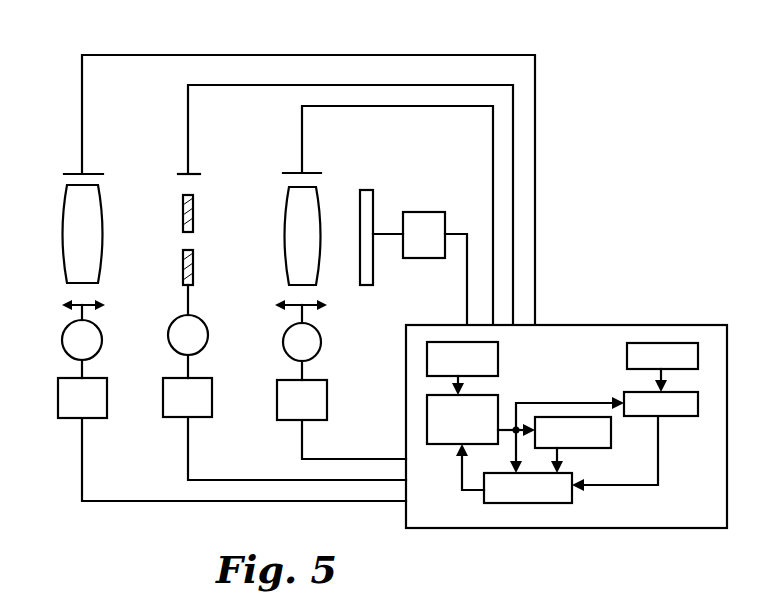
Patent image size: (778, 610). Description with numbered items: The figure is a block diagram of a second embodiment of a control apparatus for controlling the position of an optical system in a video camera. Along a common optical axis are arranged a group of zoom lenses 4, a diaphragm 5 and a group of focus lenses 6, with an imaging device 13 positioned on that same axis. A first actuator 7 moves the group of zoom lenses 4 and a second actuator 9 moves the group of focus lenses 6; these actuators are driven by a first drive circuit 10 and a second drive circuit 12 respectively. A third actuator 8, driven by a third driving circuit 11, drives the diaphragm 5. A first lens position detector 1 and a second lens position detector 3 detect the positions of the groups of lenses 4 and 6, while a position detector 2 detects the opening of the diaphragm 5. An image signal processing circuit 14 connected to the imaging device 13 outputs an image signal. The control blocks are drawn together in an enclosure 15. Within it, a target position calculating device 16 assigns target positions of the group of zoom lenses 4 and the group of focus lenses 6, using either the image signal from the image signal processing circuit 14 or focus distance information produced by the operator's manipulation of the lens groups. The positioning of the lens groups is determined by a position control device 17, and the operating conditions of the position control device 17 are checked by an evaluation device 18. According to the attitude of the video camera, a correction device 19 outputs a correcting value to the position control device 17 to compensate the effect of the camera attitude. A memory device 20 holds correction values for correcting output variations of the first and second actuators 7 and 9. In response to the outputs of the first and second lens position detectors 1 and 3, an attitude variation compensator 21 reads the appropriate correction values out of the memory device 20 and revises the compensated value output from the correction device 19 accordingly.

The first lens position detector 1 is at (76, 174).
The position detector 2 is at (183, 174).
The second lens position detector 3 is at (294, 172).
The group of zoom lenses 4 is at (60, 230).
The diaphragm 5 is at (182, 218).
The group of focus lenses 6 is at (281, 226).
The first actuator 7 is at (62, 342).
The third actuator 8 is at (168, 338).
The second actuator 9 is at (283, 347).
The first drive circuit 10 is at (58, 405).
The third driving circuit 11 is at (163, 402).
The second drive circuit 12 is at (277, 402).
The imaging device 13 is at (375, 276).
The image signal processing circuit 14 is at (430, 212).
The control unit 15 is at (412, 325).
The target position calculating device 16 is at (427, 365).
The position control device 17 is at (427, 415).
The evaluation device 18 is at (580, 417).
The correction device 19 is at (533, 503).
The memory device 20 is at (678, 350).
The attitude variation compensator 21 is at (683, 416).